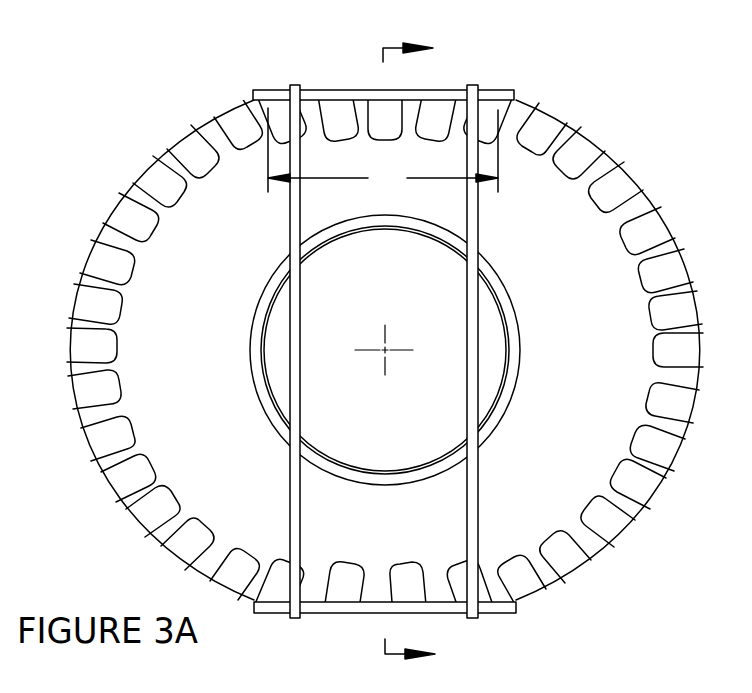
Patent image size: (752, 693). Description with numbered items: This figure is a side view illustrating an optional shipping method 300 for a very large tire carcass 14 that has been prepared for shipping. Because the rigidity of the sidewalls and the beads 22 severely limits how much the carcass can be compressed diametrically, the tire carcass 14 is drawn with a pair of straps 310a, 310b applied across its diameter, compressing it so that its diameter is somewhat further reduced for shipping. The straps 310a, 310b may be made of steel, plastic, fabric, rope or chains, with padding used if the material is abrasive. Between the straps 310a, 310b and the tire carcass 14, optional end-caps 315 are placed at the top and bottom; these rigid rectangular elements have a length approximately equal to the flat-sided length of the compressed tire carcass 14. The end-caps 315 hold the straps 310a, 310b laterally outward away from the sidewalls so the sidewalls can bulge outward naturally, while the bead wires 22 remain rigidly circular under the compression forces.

The shipping method 300 is at (391, 352).
The tire carcass 14 is at (580, 435).
The beads 22 is at (292, 422).
The end-caps 315 is at (513, 93).
The strap 310a is at (301, 426).
The strap 310b is at (468, 417).